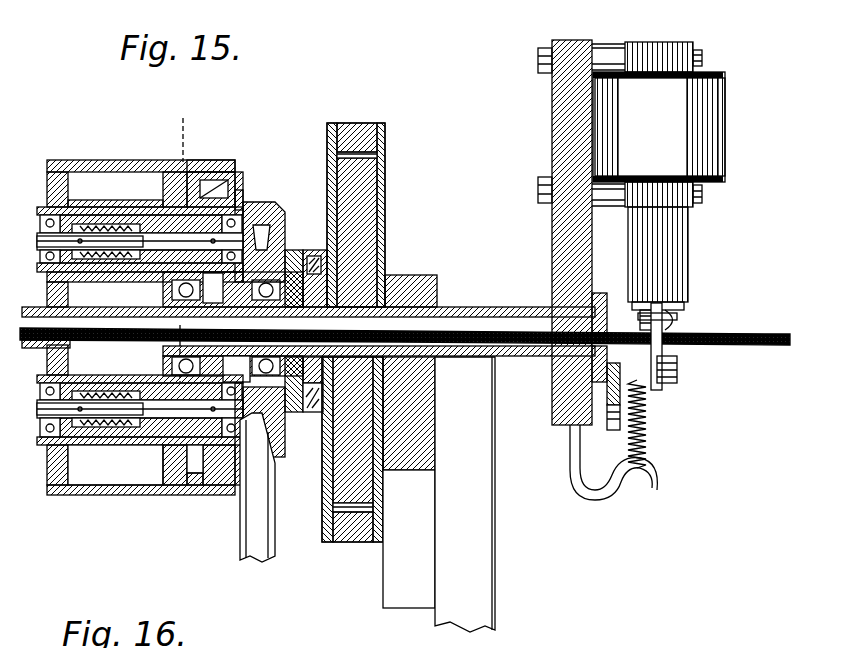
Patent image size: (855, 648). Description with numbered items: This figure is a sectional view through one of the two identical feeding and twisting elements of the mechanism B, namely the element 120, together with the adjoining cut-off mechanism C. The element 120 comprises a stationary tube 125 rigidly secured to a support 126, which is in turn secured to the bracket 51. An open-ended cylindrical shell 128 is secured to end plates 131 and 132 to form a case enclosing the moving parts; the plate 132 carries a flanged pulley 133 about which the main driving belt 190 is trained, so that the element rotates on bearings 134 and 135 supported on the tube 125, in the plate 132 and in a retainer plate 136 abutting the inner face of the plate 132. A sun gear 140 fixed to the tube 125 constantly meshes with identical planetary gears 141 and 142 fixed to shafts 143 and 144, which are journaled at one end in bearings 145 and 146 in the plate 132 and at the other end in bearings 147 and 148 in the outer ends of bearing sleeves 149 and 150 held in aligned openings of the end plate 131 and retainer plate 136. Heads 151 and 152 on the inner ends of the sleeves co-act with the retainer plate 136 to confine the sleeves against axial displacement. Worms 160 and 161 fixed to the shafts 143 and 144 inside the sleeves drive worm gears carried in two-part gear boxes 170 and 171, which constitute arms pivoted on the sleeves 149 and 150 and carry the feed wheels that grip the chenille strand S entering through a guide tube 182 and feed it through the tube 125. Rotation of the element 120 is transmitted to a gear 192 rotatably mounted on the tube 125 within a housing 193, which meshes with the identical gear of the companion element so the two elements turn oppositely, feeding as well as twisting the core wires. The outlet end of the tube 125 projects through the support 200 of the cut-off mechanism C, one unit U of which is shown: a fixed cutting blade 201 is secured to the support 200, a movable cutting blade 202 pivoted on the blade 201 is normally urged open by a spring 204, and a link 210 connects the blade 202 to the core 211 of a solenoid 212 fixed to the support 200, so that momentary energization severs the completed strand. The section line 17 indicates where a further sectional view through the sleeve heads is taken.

The feeding and twisting mechanism B is at (57, 158).
The cut-off mechanism C is at (648, 40).
The cut-off unit U is at (717, 118).
The chenille strand S is at (780, 334).
The section line 17 is at (180, 132).
The second bracket 51 is at (480, 592).
The feeding and twisting element 120 is at (104, 496).
The tube 125 is at (477, 310).
The support 126 is at (418, 275).
The cylindrical shell 128 is at (203, 172).
The end plate 131 is at (50, 180).
The end plate 132 is at (240, 172).
The flanged pulley 133 is at (279, 207).
The bearing 134 is at (269, 261).
The bearing 135 is at (176, 289).
The retainer plate 136 is at (191, 160).
The sun gear 140 is at (170, 298).
The planetary gear 141 is at (241, 195).
The planetary gear 142 is at (202, 475).
The shaft 143 is at (152, 240).
The shaft 144 is at (158, 432).
The bearing 145 is at (234, 218).
The bearing 146 is at (246, 434).
The bearing 147 is at (42, 222).
The bearing 148 is at (36, 436).
The bearing sleeve 149 is at (78, 215).
The bearing sleeve 150 is at (62, 466).
The head 151 is at (212, 185).
The head 152 is at (194, 450).
The worm 160 is at (110, 233).
The worm 161 is at (115, 465).
The gear box 170 is at (50, 284).
The gear box 171 is at (84, 445).
The guide tube 182 is at (66, 350).
The main driving belt 190 is at (277, 550).
The gear 192 is at (371, 187).
The housing 193 is at (387, 131).
The support 200 is at (568, 42).
The fixed cutting blade 201 is at (610, 297).
The movable cutting blade 202 is at (615, 422).
The spring 204 is at (643, 448).
The link 210 is at (660, 352).
The core 211 is at (681, 233).
The solenoid 212 is at (703, 125).